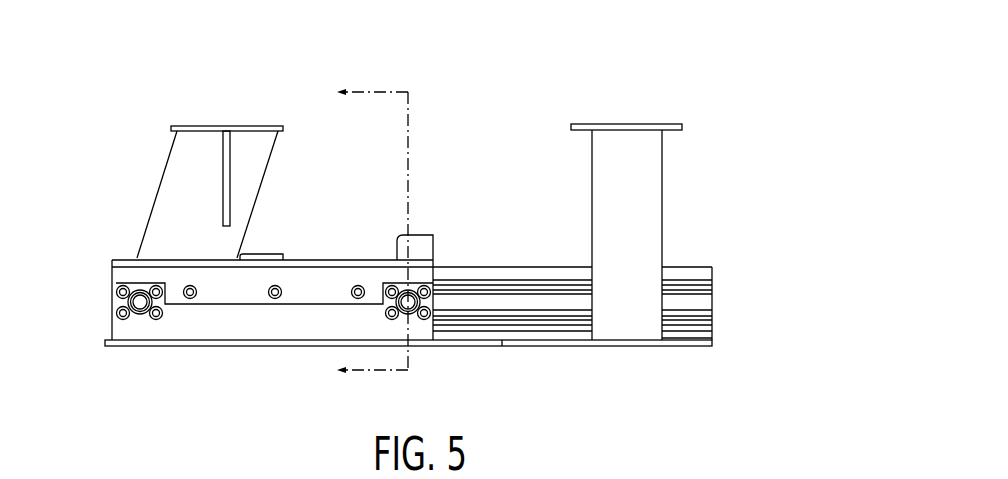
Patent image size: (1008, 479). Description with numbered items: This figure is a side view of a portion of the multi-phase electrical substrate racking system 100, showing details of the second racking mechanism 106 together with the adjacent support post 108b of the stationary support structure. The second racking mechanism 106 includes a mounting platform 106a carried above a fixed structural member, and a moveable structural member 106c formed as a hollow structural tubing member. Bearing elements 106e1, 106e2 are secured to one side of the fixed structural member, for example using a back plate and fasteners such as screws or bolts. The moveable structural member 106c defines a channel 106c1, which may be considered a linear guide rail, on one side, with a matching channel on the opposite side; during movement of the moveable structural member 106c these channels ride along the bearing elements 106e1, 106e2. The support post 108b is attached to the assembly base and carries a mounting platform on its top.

The system 100 is at (750, 130).
The second racking mechanism 106 is at (110, 218).
The mounting platform 106a is at (193, 126).
The moveable structural member 106c is at (698, 268).
The channel 106c1 is at (705, 327).
The bearing element 106e1 is at (416, 292).
The bearing element 106e2 is at (140, 305).
The support post 108b is at (602, 171).